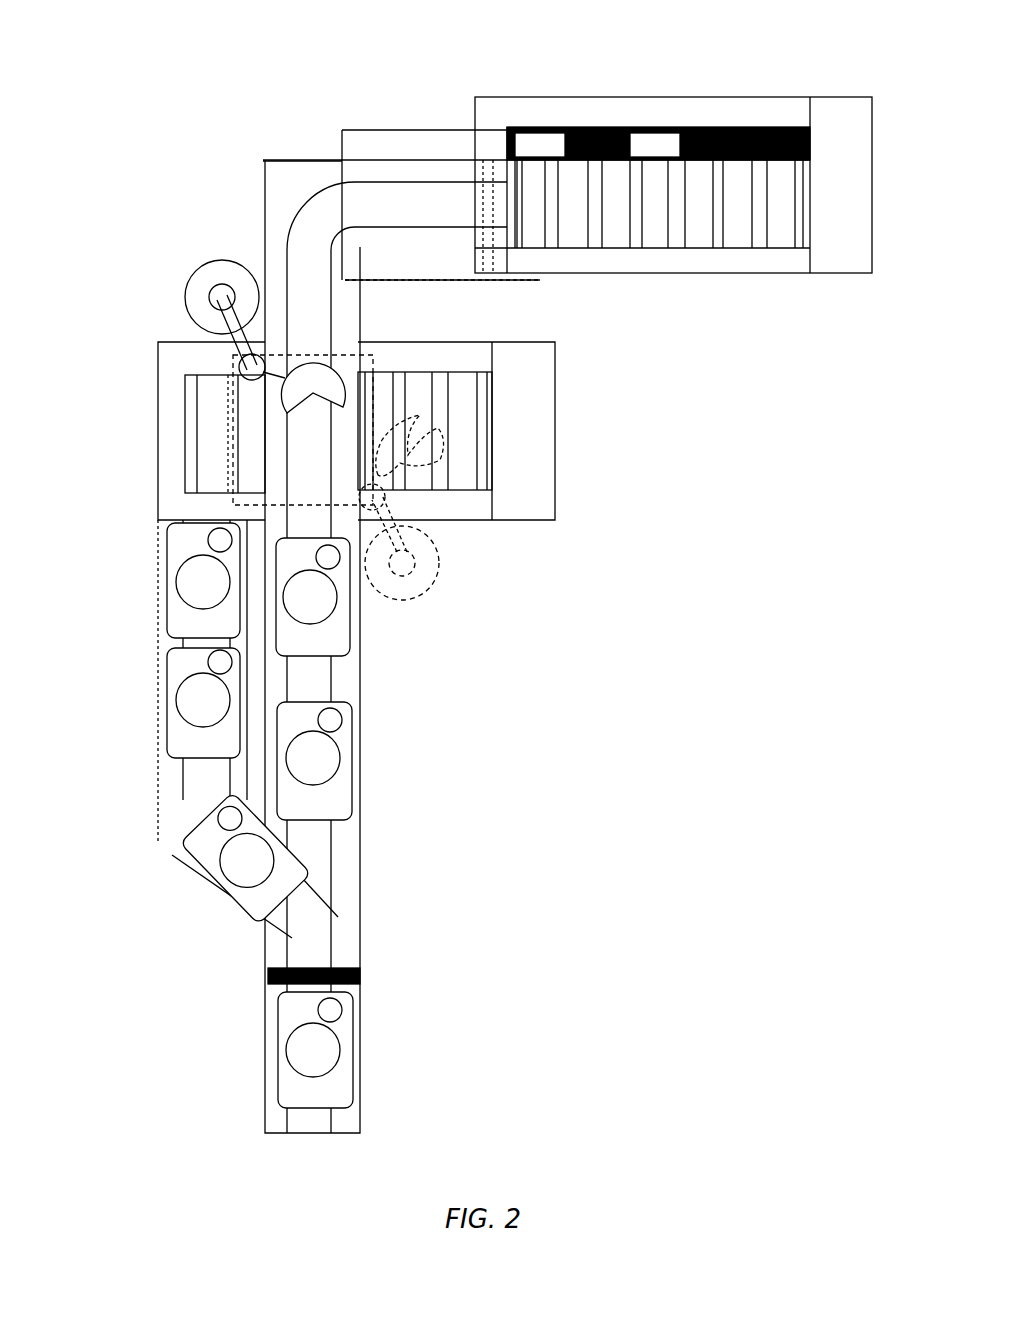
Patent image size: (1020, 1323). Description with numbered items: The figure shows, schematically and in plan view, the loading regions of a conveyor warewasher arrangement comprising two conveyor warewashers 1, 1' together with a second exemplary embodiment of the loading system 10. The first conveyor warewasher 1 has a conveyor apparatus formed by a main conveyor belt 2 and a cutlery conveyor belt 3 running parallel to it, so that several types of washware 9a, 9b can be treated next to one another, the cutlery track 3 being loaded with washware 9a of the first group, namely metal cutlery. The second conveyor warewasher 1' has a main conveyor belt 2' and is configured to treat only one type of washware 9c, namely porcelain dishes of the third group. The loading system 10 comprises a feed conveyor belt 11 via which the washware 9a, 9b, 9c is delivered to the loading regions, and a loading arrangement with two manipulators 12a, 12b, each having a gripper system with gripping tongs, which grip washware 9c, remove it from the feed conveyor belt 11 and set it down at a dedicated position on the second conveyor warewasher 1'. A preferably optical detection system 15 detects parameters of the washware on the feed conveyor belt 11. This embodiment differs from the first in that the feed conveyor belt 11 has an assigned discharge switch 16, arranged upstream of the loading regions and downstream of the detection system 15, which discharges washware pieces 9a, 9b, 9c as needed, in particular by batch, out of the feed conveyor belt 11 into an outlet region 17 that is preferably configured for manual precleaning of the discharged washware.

The conveyor warewasher 1 is at (598, 185).
The conveyor warewasher 1' is at (396, 431).
The main conveyor belt 2 is at (659, 260).
The main conveyor belt 2' is at (164, 397).
The cutlery conveyor belt 3 is at (750, 143).
The washware 9a is at (187, 620).
The washware 9b is at (172, 596).
The washware 9c is at (220, 542).
The loading system 10 is at (401, 587).
The feed conveyor belt 11 is at (298, 255).
The manipulator 12a is at (423, 442).
The manipulator 12b is at (300, 385).
The detection system 15 is at (338, 977).
The discharge switch 16 is at (135, 873).
The outlet region 17 is at (205, 790).